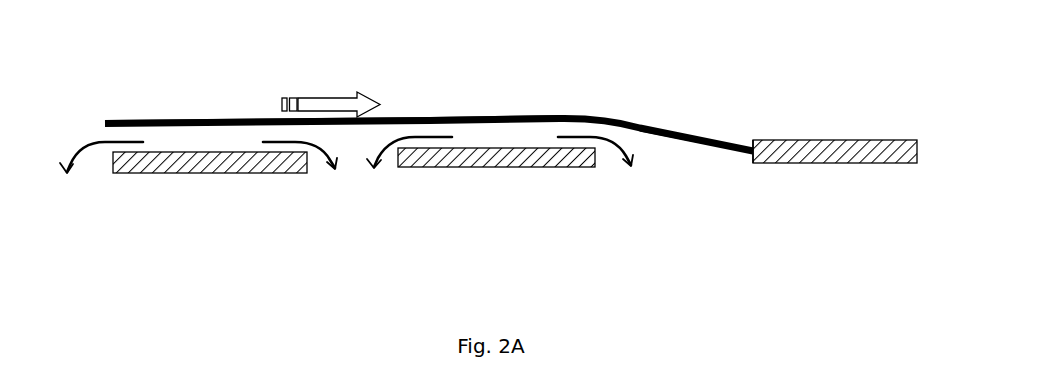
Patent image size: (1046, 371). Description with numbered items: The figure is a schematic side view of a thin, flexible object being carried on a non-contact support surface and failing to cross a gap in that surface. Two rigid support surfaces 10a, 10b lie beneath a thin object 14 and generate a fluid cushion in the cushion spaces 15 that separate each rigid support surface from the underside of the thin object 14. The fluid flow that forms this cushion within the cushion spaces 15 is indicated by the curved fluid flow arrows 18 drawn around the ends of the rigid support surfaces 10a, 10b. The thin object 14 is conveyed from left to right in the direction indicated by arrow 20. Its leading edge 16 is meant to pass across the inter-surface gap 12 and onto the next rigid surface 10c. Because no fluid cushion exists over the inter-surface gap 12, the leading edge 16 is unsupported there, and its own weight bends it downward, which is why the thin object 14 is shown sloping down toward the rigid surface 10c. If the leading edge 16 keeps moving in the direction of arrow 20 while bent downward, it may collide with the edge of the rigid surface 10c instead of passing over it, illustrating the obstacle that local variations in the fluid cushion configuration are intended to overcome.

The rigid support surface 10a is at (158, 175).
The rigid support surface 10b is at (447, 167).
The rigid surface 10c is at (757, 160).
The inter-surface gap 12 is at (678, 162).
The thin object 14 is at (240, 118).
The cushion spaces 15 is at (168, 140).
The leading edge 16 is at (733, 142).
The fluid flow arrows 18 is at (377, 152).
The arrow 20 is at (338, 98).